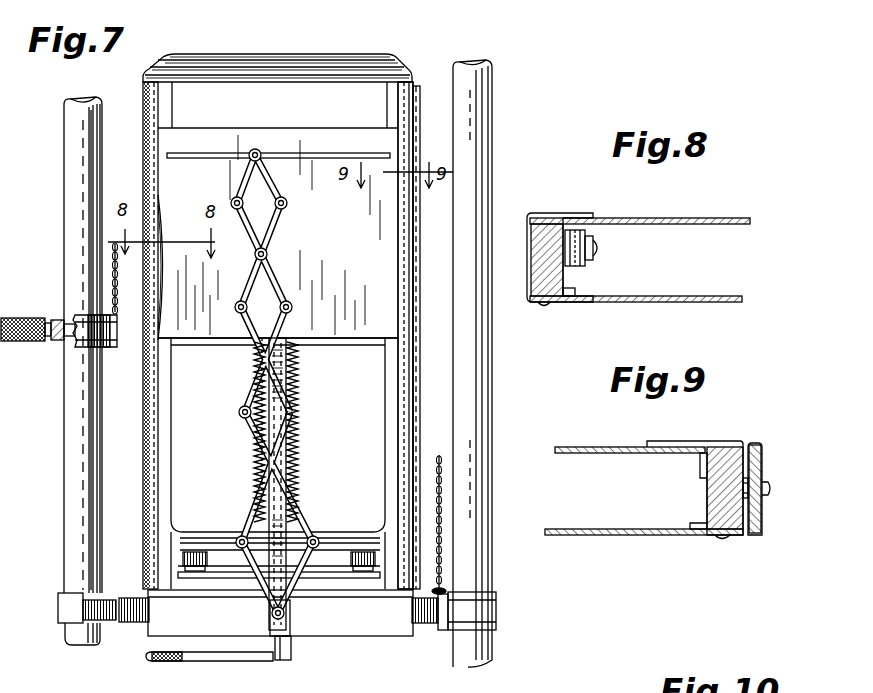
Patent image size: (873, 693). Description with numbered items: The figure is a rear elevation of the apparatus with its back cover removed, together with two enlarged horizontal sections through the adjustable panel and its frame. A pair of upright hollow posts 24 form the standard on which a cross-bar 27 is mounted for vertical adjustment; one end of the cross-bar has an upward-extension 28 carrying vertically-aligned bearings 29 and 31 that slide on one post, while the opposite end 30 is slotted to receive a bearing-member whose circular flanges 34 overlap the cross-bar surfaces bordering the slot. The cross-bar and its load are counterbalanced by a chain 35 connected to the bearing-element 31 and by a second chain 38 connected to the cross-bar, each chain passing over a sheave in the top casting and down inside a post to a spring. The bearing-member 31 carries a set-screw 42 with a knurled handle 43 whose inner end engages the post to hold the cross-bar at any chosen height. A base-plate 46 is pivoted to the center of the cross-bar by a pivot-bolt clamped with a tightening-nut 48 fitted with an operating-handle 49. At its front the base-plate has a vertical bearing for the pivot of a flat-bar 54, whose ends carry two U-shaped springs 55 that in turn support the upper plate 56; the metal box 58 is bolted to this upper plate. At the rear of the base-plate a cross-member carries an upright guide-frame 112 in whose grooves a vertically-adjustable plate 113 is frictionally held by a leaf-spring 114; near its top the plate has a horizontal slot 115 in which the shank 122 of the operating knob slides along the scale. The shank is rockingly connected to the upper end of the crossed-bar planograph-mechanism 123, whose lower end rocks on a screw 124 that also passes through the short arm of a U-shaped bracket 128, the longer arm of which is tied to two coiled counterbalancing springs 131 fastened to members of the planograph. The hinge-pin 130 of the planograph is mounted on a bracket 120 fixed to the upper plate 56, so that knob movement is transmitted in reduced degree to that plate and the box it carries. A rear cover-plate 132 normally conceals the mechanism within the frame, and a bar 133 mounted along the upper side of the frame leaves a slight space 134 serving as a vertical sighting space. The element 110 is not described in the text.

In FIG. 7, the hollow post 24 is at (72, 229).
In FIG. 7, the cross-bar 27 is at (131, 598).
In FIG. 7, the upward-extension 28 is at (97, 490).
In FIG. 7, the bearing 29 is at (70, 608).
In FIG. 7, the opposite end of cross-bar 30 is at (486, 611).
In FIG. 7, the bearing 31 is at (88, 315).
In FIG. 7, the circular flange 34 is at (494, 594).
In FIG. 7, the chain 35 is at (112, 263).
In FIG. 7, the chain 38 is at (445, 562).
In FIG. 7, the set-screw 42 is at (56, 340).
In FIG. 7, the knurled handle 43 is at (18, 318).
In FIG. 7, the base-plate 46 is at (352, 590).
In FIG. 7, the tightening-nut 48 is at (292, 658).
In FIG. 7, the operating-handle 49 is at (147, 657).
In FIG. 7, the flat-bar 54 is at (368, 574).
In FIG. 7, the U-shaped spring 55 is at (190, 552).
In FIG. 7, the upper plate 56 is at (332, 548).
In FIG. 7, the box 58 is at (378, 353).
In FIG. 7, the door 110 is at (163, 238).
In FIG. 7, the guide-frame 112 is at (408, 428).
In FIG. 8, the guide-frame 112 is at (560, 213).
In FIG. 9, the guide-frame 112 is at (722, 441).
In FIG. 7, the plate 113 is at (278, 305).
In FIG. 8, the plate 113 is at (700, 218).
In FIG. 9, the plate 113 is at (589, 447).
In FIG. 8, the leaf-spring 114 is at (578, 264).
In FIG. 7, the horizontal slot 115 is at (316, 153).
In FIG. 7, the bracket 120 is at (297, 517).
In FIG. 7, the shank 122 is at (255, 149).
In FIG. 7, the planograph-mechanism 123 is at (278, 270).
In FIG. 7, the screw 124 is at (290, 618).
In FIG. 7, the U-shaped bracket 128 is at (280, 436).
In FIG. 7, the hinge-pin 130 is at (287, 443).
In FIG. 7, the counterbalancing spring 131 is at (303, 457).
In FIG. 8, the rear cover-plate 132 is at (703, 302).
In FIG. 9, the rear cover-plate 132 is at (641, 536).
In FIG. 7, the bar 133 is at (420, 118).
In FIG. 9, the bar 133 is at (757, 537).
In FIG. 7, the space 134 is at (413, 140).
In FIG. 9, the space 134 is at (753, 447).